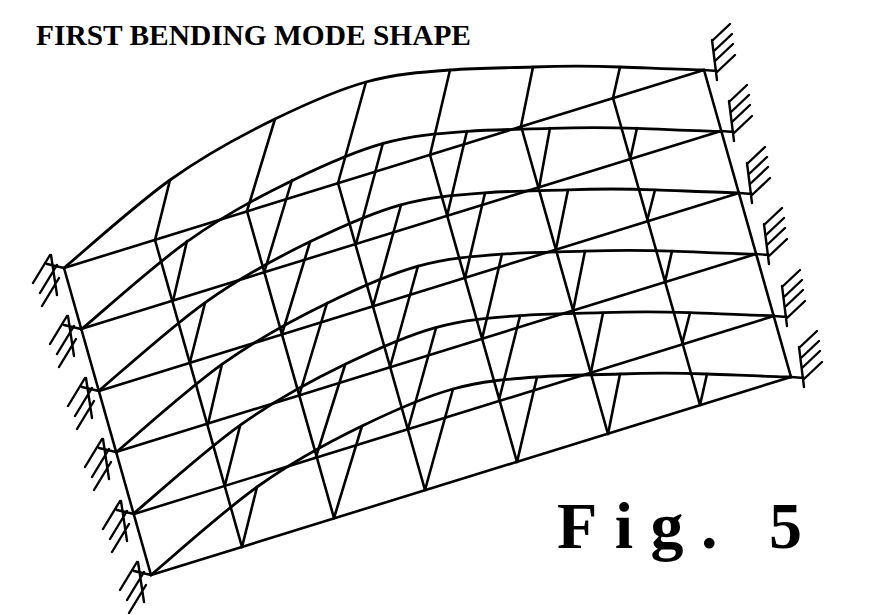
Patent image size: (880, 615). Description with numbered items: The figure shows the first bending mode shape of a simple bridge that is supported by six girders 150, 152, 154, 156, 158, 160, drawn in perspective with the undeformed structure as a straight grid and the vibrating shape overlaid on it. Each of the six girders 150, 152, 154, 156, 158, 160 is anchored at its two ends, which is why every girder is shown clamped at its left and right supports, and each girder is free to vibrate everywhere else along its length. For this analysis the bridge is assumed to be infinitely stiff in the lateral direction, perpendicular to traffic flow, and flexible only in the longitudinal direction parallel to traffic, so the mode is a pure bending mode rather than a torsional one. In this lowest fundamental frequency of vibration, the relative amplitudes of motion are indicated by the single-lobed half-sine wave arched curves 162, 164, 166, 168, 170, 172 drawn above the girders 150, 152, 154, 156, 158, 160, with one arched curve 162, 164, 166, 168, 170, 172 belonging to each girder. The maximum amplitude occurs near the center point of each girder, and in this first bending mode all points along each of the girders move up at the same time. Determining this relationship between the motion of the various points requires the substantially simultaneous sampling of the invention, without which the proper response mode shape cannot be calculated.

The girder 150 is at (662, 84).
The girder 152 is at (680, 143).
The girder 154 is at (703, 208).
The girder 156 is at (708, 272).
The girder 158 is at (733, 333).
The girder 160 is at (740, 395).
The half-sine wave arched curve 162 is at (243, 128).
The half-sine wave arched curve 164 is at (274, 180).
The half-sine wave arched curve 166 is at (279, 252).
The half-sine wave arched curve 168 is at (293, 318).
The half-sine wave arched curve 170 is at (322, 376).
The half-sine wave arched curve 172 is at (338, 434).